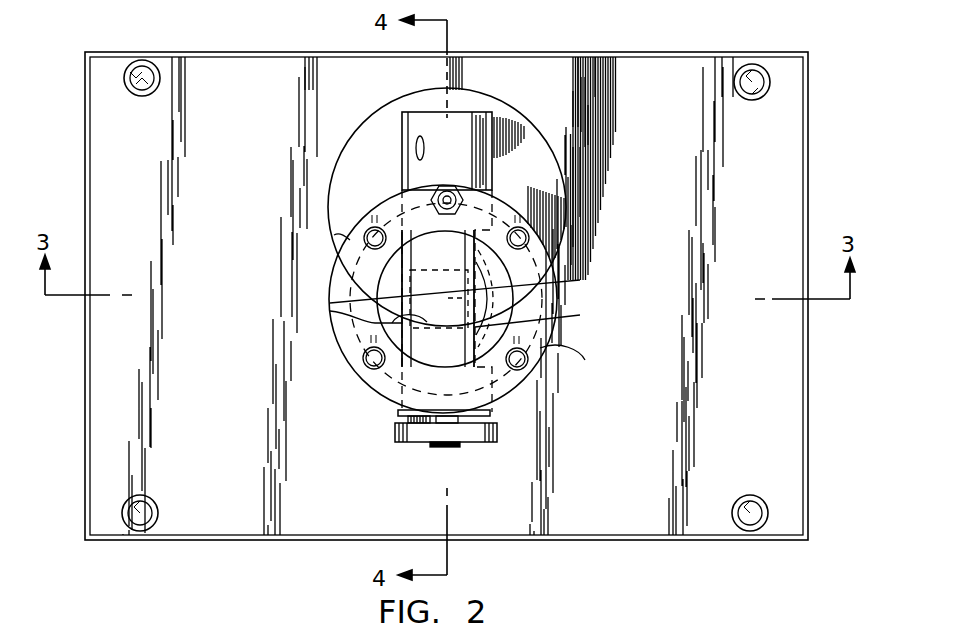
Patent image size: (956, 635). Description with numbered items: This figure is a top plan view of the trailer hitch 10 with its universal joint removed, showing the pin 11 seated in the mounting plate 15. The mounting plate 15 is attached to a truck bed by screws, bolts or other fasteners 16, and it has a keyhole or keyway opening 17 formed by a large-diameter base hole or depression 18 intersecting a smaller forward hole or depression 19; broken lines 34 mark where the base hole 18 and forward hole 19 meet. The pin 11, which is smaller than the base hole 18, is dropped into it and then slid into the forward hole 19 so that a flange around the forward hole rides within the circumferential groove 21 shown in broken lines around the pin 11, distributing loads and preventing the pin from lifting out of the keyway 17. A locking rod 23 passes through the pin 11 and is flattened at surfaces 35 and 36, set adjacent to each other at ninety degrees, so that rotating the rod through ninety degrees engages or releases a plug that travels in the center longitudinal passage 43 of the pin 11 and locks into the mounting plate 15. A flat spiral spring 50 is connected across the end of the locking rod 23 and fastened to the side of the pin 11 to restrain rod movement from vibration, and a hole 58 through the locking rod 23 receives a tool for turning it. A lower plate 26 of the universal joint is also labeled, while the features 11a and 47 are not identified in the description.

The assembly 10 is at (590, 146).
The pin 11 is at (560, 192).
The flange face 11a is at (334, 244).
The mounting plate 15 is at (632, 482).
The fasteners 16 is at (142, 72).
The keyhole or keyway opening 17 is at (562, 164).
The base hole or depression 18 is at (528, 150).
The forward hole or depression 19 is at (559, 312).
The circumferential groove 21 is at (565, 245).
The locking rod 23 is at (470, 125).
The lower plate 26 is at (390, 416).
The broken lines 34 is at (335, 260).
The flattened portion 35 is at (565, 362).
The flattened portion 36 is at (562, 284).
The center longitudinal passage 43 is at (332, 303).
The cavity 47 is at (405, 324).
The flat spiral spring 50 is at (470, 442).
The hole 58 is at (416, 148).